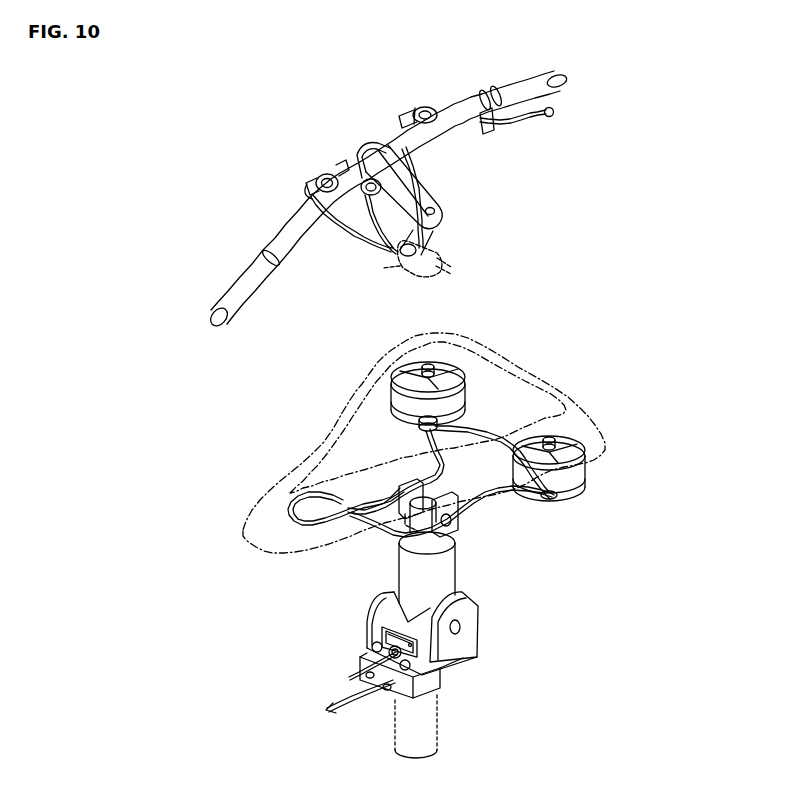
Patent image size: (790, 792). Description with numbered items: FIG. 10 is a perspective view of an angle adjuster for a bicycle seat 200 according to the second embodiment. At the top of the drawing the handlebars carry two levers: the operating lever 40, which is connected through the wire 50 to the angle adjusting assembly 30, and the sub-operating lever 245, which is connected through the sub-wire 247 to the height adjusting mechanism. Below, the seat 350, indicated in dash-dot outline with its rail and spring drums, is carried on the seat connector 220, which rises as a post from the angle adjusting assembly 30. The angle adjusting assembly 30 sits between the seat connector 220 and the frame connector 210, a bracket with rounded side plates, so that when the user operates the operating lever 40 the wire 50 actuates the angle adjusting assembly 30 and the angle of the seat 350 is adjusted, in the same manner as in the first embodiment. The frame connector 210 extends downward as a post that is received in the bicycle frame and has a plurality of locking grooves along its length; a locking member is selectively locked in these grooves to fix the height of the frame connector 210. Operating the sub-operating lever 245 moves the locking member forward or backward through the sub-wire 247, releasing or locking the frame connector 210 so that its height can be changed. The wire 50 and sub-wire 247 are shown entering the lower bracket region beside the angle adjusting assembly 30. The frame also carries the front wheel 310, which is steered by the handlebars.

The operating lever 40 is at (422, 108).
The sub-operating lever 245 is at (325, 174).
The wire 50 is at (421, 178).
The sub-wire 247 is at (358, 232).
The seat 350 is at (508, 393).
The seat connector 220 is at (445, 577).
The frame connector 210 is at (458, 645).
The angle adjusting assembly 30 is at (378, 628).
The front wheel 310 is at (432, 738).
The angle adjuster for a bicycle seat 200 is at (578, 562).